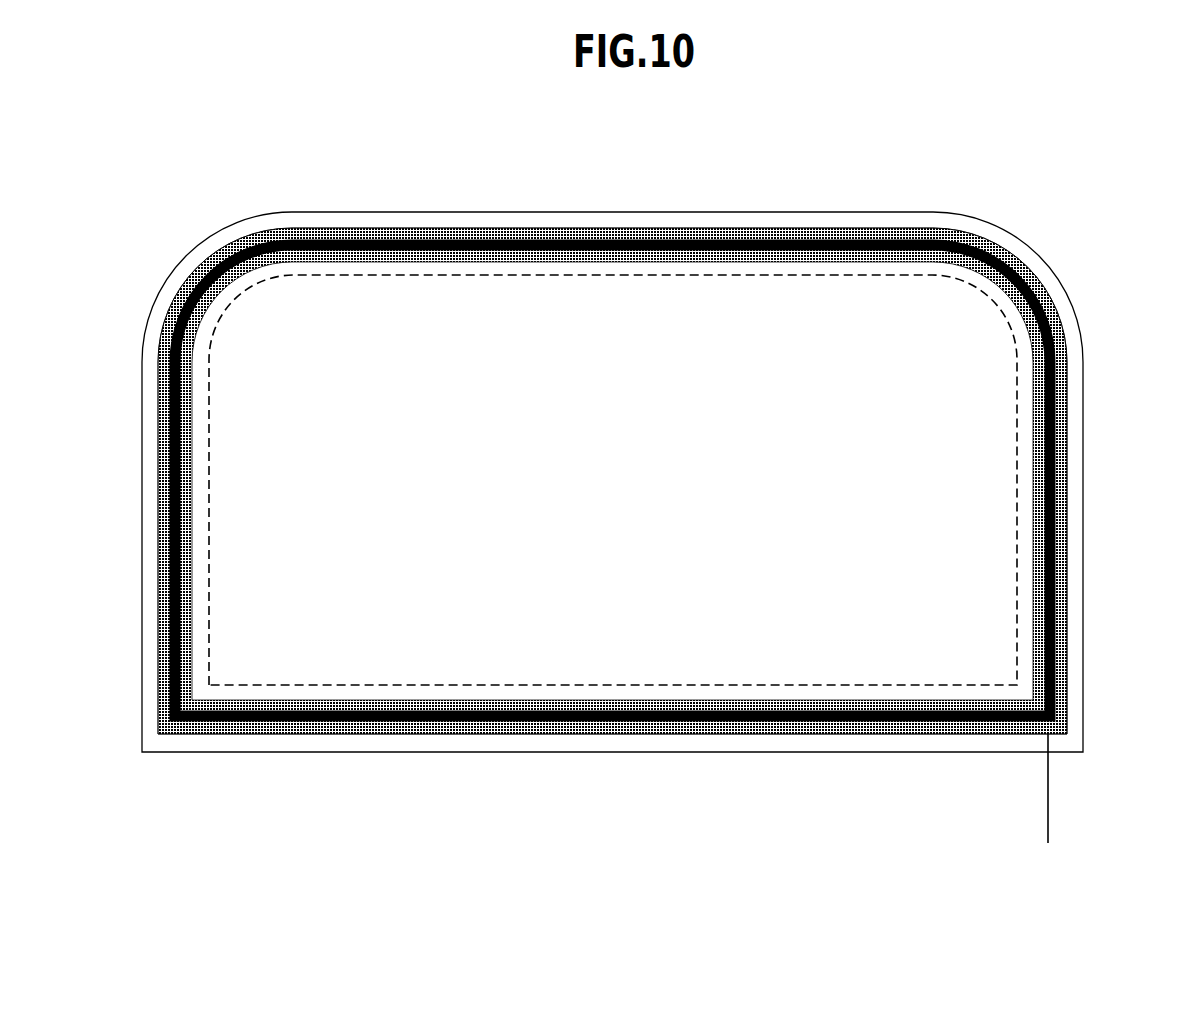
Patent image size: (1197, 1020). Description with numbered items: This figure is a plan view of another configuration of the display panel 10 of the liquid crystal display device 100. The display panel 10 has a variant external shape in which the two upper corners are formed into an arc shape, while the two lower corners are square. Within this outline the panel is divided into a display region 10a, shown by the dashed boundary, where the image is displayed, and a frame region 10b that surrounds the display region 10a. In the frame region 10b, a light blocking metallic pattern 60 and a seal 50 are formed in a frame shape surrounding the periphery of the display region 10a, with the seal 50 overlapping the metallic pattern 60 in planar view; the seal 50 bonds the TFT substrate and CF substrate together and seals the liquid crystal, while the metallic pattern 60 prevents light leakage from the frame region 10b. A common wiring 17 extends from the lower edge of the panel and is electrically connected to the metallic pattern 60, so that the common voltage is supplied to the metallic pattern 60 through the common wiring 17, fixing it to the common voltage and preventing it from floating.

The liquid crystal display device 100 is at (1010, 177).
The display panel 10 is at (863, 211).
The display region 10a is at (787, 275).
The frame region 10b is at (618, 227).
The metallic pattern 60 is at (1062, 467).
The seal 50 is at (1052, 548).
The common wiring 17 is at (1049, 805).